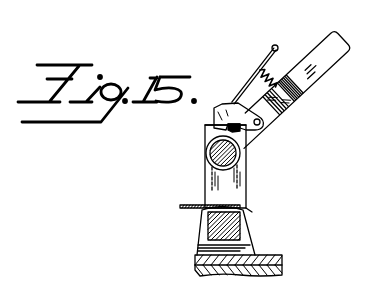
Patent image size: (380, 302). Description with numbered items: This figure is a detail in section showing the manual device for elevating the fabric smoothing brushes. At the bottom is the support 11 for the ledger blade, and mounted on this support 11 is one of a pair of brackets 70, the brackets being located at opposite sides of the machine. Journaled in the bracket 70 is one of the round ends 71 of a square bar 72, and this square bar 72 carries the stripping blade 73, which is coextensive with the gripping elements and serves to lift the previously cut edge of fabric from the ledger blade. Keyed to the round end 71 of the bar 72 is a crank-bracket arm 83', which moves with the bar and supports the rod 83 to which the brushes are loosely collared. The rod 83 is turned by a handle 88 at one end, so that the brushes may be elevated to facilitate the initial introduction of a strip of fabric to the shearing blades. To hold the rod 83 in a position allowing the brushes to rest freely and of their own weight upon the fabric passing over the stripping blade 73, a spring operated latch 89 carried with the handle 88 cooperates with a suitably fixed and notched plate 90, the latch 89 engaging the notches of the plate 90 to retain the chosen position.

The handle 88 is at (335, 63).
The spring operated latch 89 is at (227, 103).
The notched plate 90 is at (210, 125).
The rod 83 is at (242, 153).
The crank-bracket arms 83' is at (259, 166).
The stripping blade 73 is at (190, 208).
The brackets 70 is at (248, 242).
The round ends 71 is at (254, 211).
The square bar 72 is at (237, 235).
The support 11 is at (200, 272).